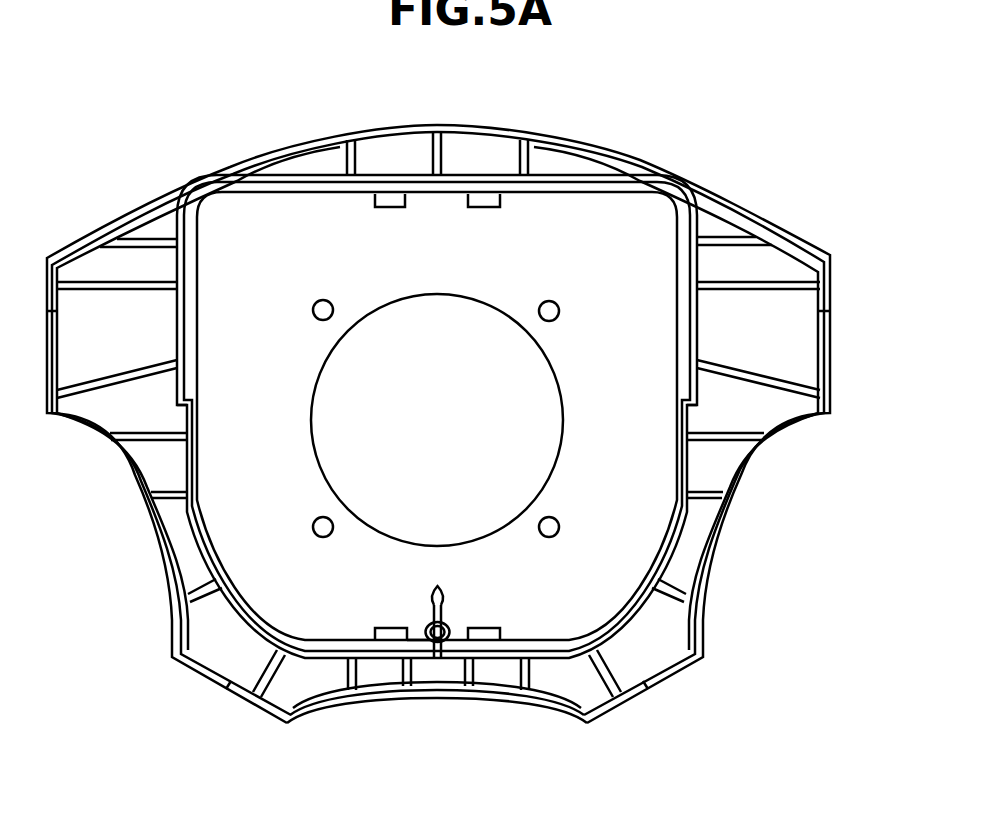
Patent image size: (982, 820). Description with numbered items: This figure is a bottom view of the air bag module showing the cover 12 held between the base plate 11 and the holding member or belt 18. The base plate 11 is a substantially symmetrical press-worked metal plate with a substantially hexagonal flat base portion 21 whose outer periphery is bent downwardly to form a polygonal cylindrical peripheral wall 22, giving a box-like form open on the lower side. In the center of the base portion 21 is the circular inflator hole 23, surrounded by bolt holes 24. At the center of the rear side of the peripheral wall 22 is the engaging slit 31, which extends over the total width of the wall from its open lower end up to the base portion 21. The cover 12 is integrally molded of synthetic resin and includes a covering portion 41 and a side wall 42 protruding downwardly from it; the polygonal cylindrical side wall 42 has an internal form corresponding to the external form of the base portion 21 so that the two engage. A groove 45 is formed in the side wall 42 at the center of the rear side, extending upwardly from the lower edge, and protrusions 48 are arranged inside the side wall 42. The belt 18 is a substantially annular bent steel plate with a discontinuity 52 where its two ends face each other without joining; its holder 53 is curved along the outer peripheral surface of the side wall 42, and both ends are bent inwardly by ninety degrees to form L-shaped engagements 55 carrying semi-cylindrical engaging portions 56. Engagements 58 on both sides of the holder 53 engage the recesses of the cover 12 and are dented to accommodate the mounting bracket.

The base plate 11 is at (588, 228).
The cover 12 is at (570, 136).
The belt 18 is at (695, 220).
The base portion 21 is at (632, 220).
The peripheral wall 22 is at (727, 265).
The inflator hole 23 is at (562, 392).
The bolt holes 24 is at (323, 300).
The engaging slit 31 is at (415, 630).
The covering portion 41 is at (720, 405).
The side wall 42 is at (685, 318).
The groove 45 is at (430, 656).
The protrusions 48 is at (392, 197).
The discontinuity 52 is at (441, 675).
The holder 53 is at (697, 340).
The engagements 55 is at (443, 603).
The engaging portions 56 is at (418, 628).
The engagements 58 is at (685, 458).